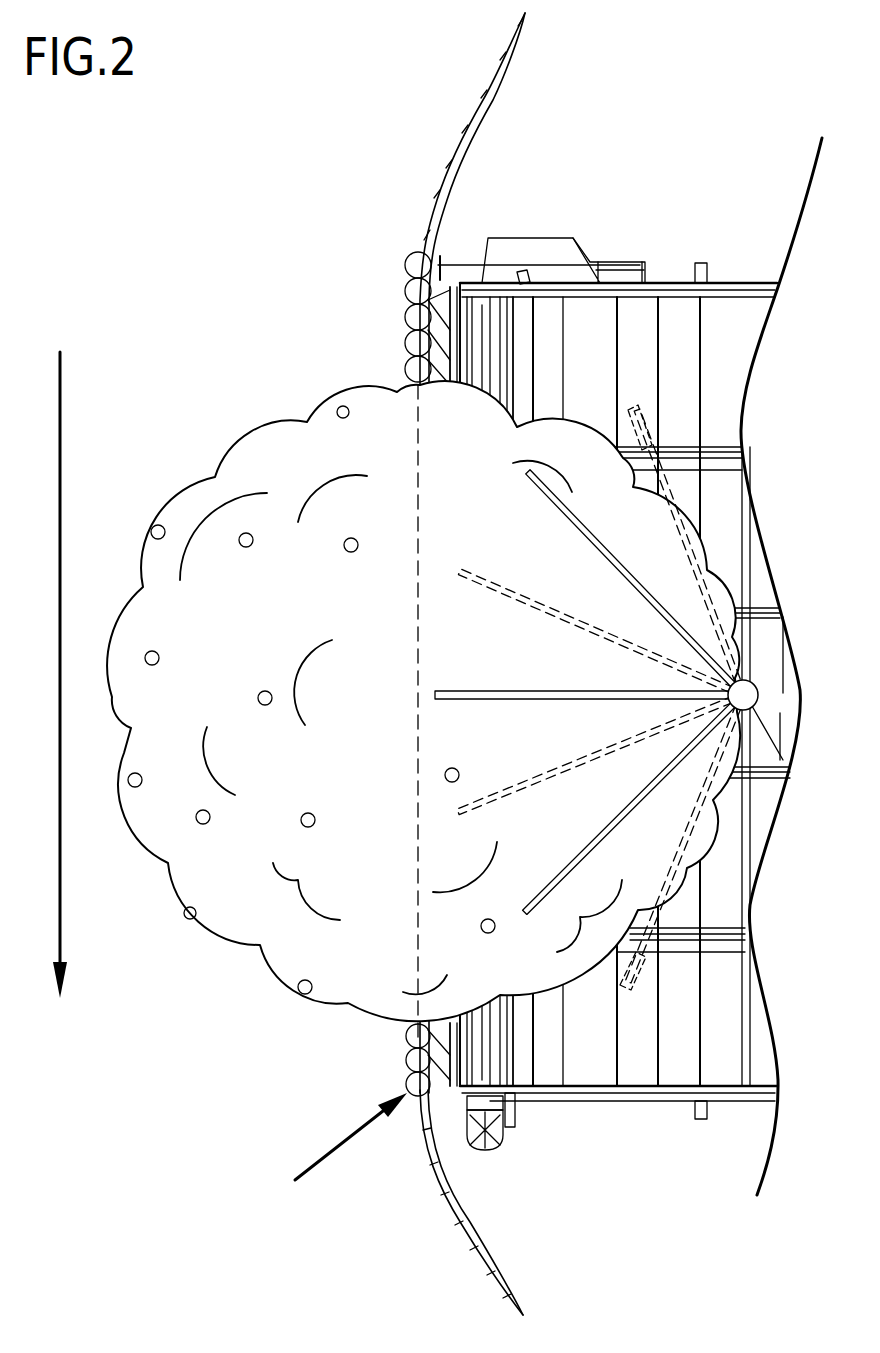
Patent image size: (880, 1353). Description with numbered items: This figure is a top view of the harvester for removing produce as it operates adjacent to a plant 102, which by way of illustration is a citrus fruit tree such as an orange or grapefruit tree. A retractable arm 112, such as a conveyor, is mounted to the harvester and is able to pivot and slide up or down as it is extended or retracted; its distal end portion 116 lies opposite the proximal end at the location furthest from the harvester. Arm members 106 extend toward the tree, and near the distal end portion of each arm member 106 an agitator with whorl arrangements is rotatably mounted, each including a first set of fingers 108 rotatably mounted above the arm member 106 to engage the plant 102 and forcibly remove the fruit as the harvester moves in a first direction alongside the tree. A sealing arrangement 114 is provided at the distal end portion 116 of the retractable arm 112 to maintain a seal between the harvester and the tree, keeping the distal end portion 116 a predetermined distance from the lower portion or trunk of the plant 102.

The plant 102 is at (210, 378).
The arm member 106 is at (760, 712).
The first set of fingers 108 is at (588, 537).
The retractable arm 112 is at (682, 1015).
The sealing arrangement 114 is at (326, 1158).
The distal end portion 116 is at (436, 342).